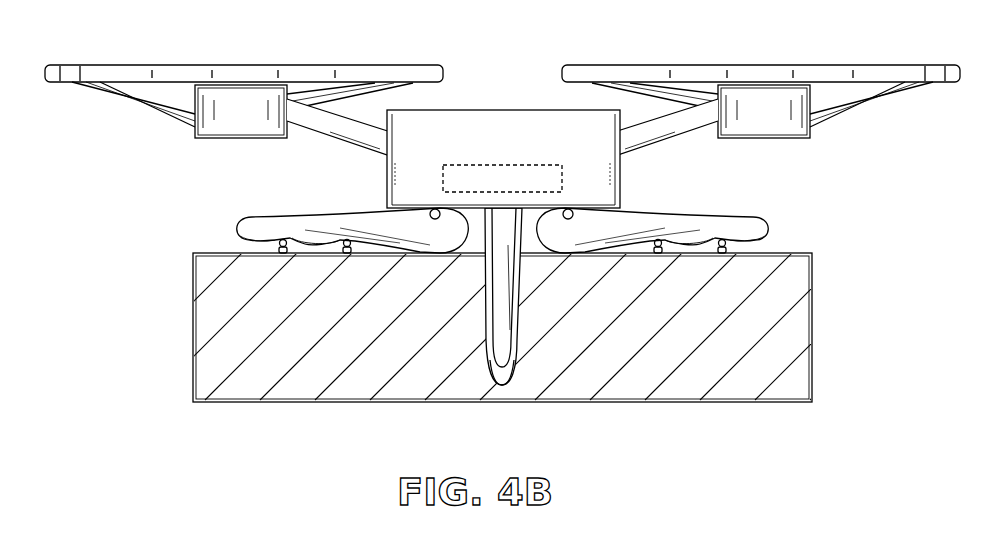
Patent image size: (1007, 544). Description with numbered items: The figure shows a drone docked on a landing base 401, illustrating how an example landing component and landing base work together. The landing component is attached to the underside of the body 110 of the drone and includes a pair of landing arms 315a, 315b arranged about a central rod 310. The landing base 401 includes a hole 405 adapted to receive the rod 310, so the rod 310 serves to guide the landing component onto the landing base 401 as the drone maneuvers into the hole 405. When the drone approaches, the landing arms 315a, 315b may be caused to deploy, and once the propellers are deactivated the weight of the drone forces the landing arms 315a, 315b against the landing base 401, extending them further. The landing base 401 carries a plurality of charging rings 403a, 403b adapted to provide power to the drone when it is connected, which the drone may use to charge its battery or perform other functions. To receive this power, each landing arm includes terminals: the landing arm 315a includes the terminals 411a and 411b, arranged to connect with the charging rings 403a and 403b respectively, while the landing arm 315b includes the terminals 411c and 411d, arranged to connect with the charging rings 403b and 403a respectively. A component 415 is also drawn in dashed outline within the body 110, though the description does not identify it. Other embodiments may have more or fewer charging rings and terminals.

The body 110 is at (470, 110).
The sensor unit 415 is at (530, 165).
The landing arm 315a is at (659, 220).
The landing arm 315b is at (346, 220).
The terminal 411a is at (698, 240).
The terminal 411b is at (758, 243).
The terminal 411c is at (250, 244).
The terminal 411d is at (307, 237).
The charging ring 403a is at (347, 258).
The charging ring 403b is at (283, 256).
The hole 405 is at (501, 383).
The rod 310 is at (512, 305).
The landing base 401 is at (700, 435).